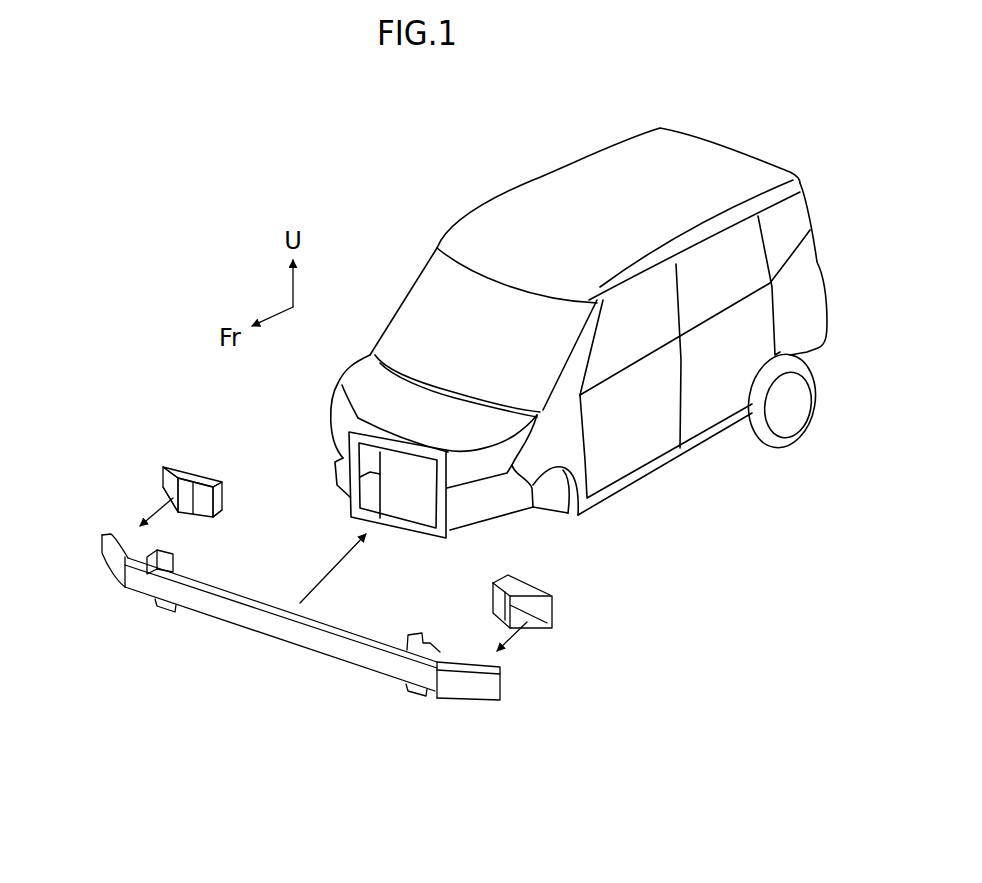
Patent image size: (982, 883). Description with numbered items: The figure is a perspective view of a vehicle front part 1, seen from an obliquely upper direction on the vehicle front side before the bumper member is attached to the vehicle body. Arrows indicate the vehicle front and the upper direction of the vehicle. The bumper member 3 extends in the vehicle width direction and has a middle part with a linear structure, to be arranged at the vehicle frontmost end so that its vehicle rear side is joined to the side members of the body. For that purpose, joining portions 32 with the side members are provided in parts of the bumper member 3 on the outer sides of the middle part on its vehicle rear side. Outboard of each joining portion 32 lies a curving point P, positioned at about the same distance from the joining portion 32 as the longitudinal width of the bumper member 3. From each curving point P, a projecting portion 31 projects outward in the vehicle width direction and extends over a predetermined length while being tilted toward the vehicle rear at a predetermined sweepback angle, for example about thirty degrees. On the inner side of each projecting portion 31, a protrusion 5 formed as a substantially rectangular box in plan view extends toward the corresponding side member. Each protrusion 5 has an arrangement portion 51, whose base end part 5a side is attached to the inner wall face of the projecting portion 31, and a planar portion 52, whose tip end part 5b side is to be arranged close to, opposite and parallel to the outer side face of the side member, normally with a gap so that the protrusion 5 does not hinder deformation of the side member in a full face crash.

The vehicle front part 1 is at (330, 394).
The bumper member 3 is at (274, 645).
The projecting portion 31 is at (112, 565).
The joining portion 32 is at (173, 552).
The protrusion 5 is at (356, 535).
The base end part 5a is at (173, 468).
The tip end part 5b is at (214, 477).
The arrangement portion 51 is at (162, 492).
The planar portion 52 is at (217, 497).
The curving point P is at (122, 588).